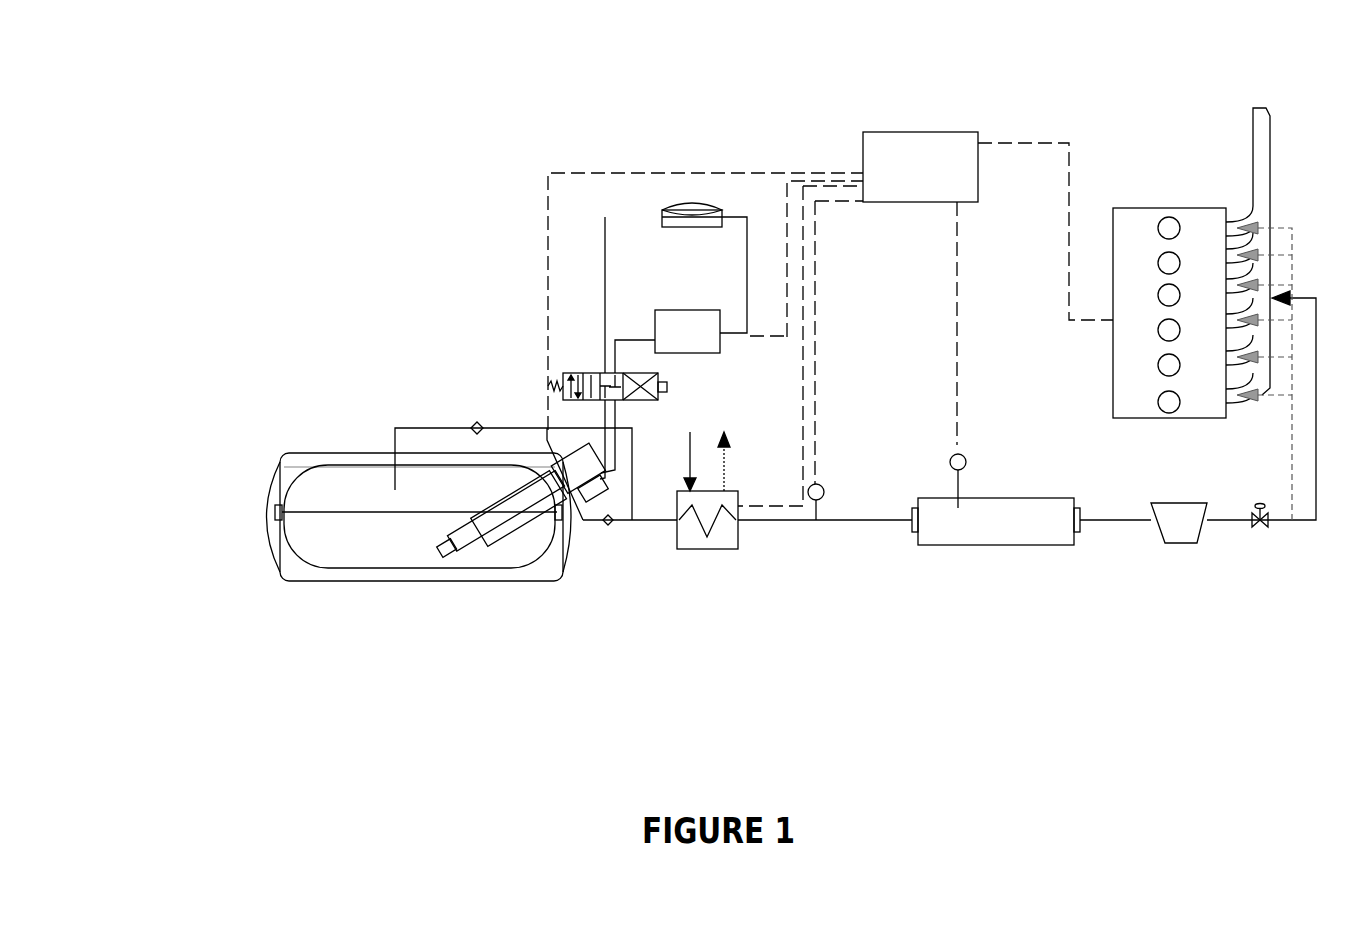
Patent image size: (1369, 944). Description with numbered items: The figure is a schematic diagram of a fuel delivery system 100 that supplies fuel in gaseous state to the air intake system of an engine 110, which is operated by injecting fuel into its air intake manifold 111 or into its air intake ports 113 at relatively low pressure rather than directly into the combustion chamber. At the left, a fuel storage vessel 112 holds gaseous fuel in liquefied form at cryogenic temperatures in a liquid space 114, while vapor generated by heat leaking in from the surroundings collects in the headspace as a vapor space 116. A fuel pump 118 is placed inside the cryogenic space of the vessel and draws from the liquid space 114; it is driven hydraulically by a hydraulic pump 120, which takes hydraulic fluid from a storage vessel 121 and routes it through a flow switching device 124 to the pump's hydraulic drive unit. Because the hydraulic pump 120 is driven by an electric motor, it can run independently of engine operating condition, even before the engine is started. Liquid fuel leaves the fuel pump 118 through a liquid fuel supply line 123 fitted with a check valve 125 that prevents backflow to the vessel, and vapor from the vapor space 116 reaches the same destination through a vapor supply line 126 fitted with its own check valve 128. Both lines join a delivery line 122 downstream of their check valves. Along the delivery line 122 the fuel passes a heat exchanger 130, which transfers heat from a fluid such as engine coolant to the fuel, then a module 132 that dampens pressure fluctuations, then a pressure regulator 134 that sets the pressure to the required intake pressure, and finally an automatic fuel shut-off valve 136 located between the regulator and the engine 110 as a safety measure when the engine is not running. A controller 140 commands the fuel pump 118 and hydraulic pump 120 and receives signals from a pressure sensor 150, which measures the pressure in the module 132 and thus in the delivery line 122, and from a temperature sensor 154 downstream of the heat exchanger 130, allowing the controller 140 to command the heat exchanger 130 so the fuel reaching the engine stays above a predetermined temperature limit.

The fuel delivery system 100 is at (228, 142).
The engine 110 is at (1185, 203).
The air intake manifold 111 is at (1263, 170).
The fuel storage vessel 112 is at (286, 456).
The air intake ports 113 is at (1238, 398).
The liquid space 114 is at (327, 540).
The vapor space 116 is at (358, 490).
The fuel pump 118 is at (463, 540).
The hydraulic pump 120 is at (710, 344).
The storage vessel 121 is at (703, 203).
The delivery line 122 is at (872, 522).
The liquid fuel supply line 123 is at (585, 522).
The flow switching device 124 is at (594, 372).
The check valve 125 is at (620, 522).
The vapor supply line 126 is at (432, 427).
The check valve 128 is at (480, 425).
The heat exchanger 130 is at (738, 535).
The module 132 is at (993, 525).
The pressure regulator 134 is at (1185, 535).
The automatic fuel shut-off valve 136 is at (1265, 525).
The controller 140 is at (937, 140).
The pressure sensor 150 is at (966, 458).
The temperature sensor 154 is at (823, 487).